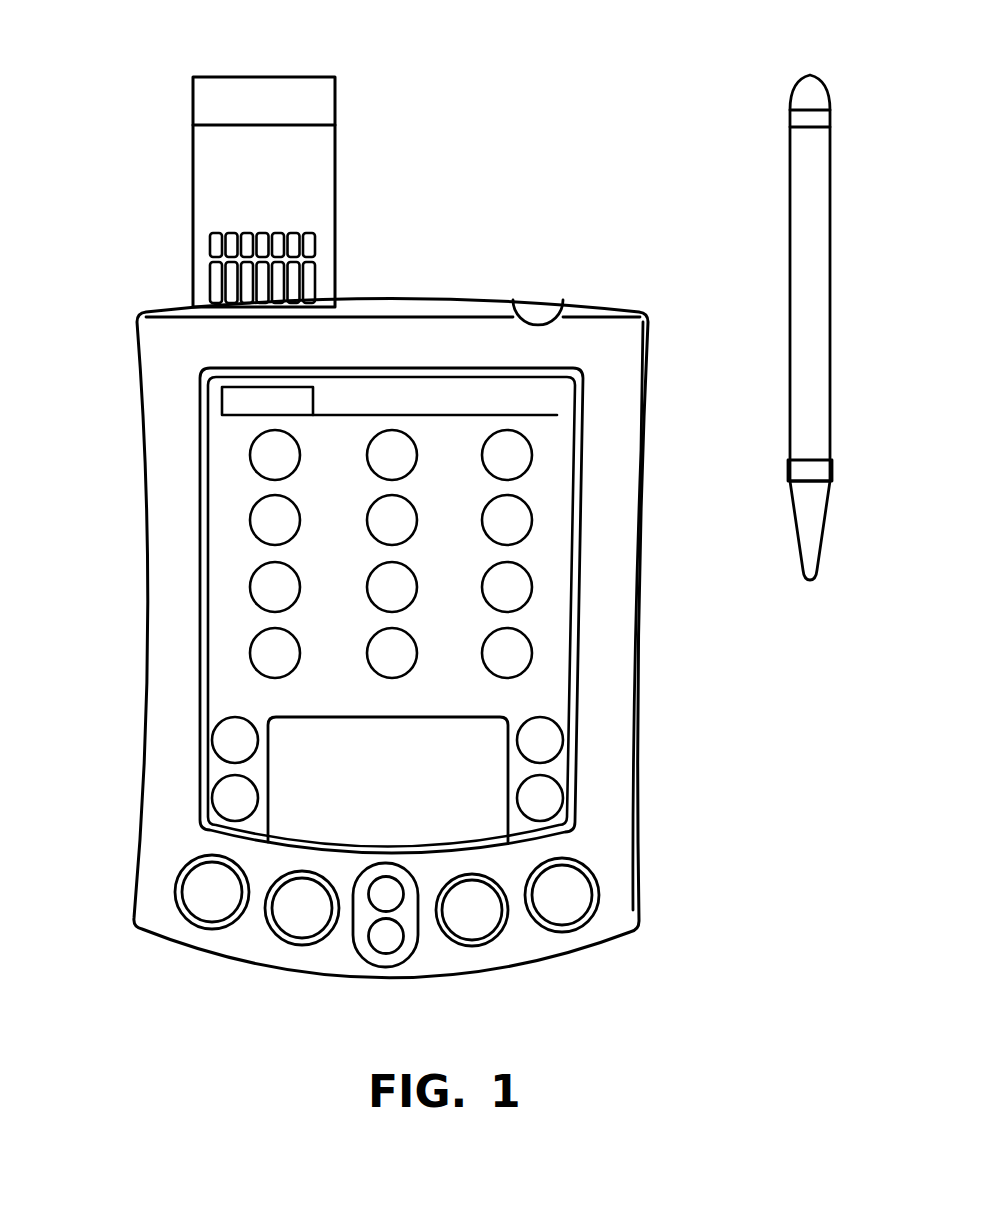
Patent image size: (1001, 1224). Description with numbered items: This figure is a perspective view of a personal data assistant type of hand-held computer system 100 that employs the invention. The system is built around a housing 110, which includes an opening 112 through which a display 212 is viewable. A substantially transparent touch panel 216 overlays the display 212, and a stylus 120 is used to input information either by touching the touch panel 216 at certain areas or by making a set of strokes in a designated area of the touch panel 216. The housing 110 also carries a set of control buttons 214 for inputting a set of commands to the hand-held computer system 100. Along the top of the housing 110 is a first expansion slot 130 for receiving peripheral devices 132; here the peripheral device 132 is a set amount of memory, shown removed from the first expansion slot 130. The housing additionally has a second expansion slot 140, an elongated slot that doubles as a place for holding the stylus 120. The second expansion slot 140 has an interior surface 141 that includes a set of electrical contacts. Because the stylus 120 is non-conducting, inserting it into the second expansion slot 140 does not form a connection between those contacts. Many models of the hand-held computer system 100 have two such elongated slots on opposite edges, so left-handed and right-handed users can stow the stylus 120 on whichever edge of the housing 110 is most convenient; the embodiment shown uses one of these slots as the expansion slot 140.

The hand-held computer system 100 is at (90, 82).
The housing 110 is at (145, 642).
The opening 112 is at (572, 690).
The stylus 120 is at (833, 296).
The first expansion slot 130 is at (338, 298).
The peripheral device 132 is at (193, 190).
The second expansion slot 140 is at (650, 374).
The interior surface 141 is at (641, 524).
The display 212 is at (467, 612).
The control buttons 214 is at (300, 918).
The touch panel 216 is at (545, 743).